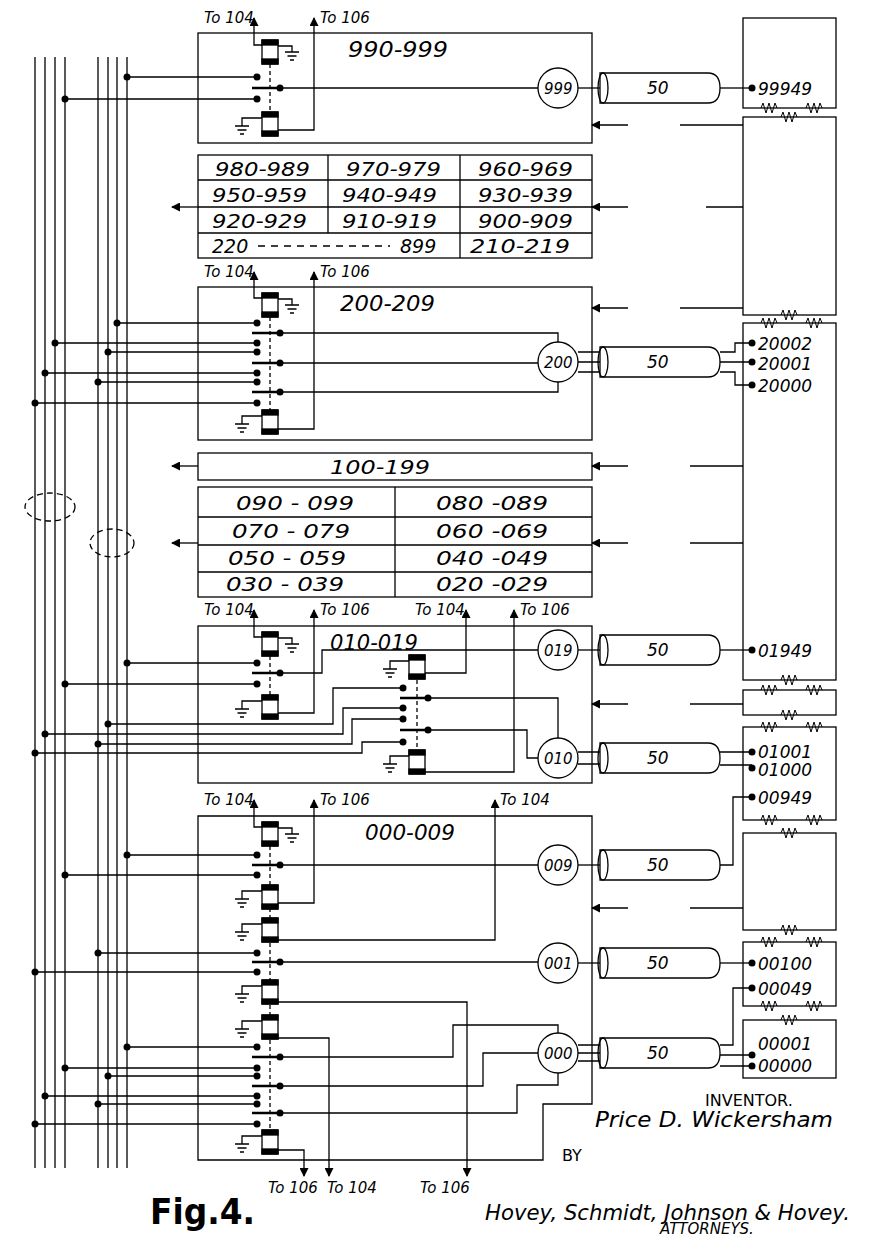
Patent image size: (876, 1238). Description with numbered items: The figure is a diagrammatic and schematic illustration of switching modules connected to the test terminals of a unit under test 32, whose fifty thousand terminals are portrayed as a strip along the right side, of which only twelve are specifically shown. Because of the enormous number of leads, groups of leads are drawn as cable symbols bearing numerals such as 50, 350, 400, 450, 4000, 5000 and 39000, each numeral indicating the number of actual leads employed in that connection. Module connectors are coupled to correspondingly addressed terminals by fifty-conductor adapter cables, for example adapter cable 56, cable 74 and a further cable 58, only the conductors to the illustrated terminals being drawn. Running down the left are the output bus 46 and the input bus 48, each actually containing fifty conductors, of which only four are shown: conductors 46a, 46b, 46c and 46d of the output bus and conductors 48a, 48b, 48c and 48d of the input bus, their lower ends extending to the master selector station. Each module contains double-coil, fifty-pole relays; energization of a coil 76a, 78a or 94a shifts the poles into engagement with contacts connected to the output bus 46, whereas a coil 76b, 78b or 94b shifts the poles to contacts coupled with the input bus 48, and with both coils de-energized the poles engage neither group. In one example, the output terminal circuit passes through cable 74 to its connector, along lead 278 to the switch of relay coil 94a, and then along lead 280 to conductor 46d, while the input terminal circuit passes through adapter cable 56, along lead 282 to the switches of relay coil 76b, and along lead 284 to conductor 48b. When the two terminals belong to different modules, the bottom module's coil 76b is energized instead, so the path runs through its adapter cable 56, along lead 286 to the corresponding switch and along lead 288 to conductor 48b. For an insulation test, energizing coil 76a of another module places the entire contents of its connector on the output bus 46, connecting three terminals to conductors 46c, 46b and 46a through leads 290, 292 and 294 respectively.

The unit under test 32 is at (743, 23).
The output bus 46 is at (123, 632).
The output bus conductor 46a is at (98, 1168).
The output bus conductor 46b is at (108, 1168).
The output bus conductor 46c is at (117, 1168).
The output bus conductor 46d is at (127, 1160).
The input bus 48 is at (59, 642).
The input bus conductor 48a is at (38, 1168).
The input bus conductor 48b is at (45, 1168).
The input bus conductor 48c is at (55, 1168).
The input bus conductor 48d is at (80, 1157).
The lead count designation 50 is at (100, 537).
The adapter cable 56 is at (706, 348).
The cable 58 is at (706, 949).
The cable 74 is at (672, 73).
The relay coil 76a is at (262, 305).
The relay coil 76b is at (278, 422).
The relay coil 78a is at (278, 932).
The relay coil 78b is at (278, 994).
The relay coil 94a is at (262, 52).
The relay coil 94b is at (278, 124).
The lead 278 is at (497, 650).
The lead 280 is at (183, 664).
The lead 282 is at (453, 703).
The lead 284 is at (220, 736).
The lead 286 is at (373, 1084).
The lead 288 is at (138, 1094).
The lead 290 is at (135, 323).
The lead 292 is at (135, 343).
The lead 294 is at (135, 373).
The control line 350 is at (667, 908).
The control line 400 is at (667, 704).
The lead count designation 450 is at (667, 217).
The control line 4000 is at (667, 543).
The control line 5000 is at (667, 466).
The lead count designation 39000 is at (667, 207).